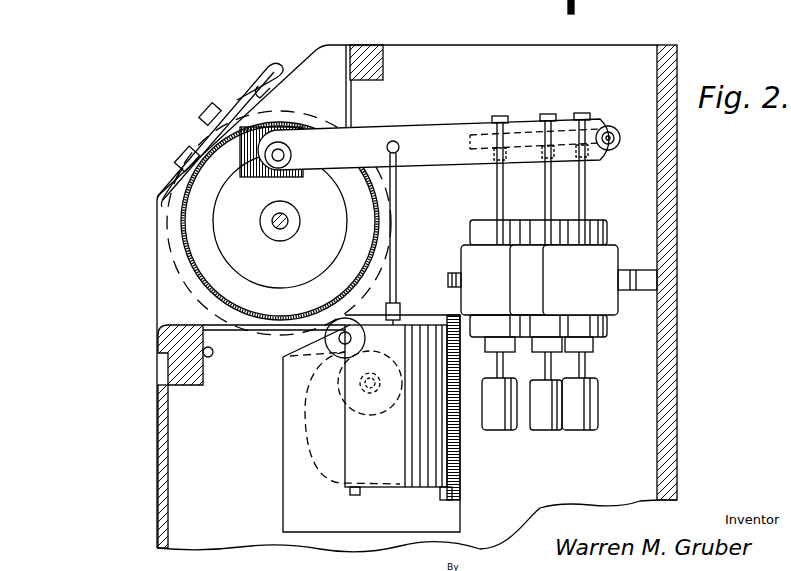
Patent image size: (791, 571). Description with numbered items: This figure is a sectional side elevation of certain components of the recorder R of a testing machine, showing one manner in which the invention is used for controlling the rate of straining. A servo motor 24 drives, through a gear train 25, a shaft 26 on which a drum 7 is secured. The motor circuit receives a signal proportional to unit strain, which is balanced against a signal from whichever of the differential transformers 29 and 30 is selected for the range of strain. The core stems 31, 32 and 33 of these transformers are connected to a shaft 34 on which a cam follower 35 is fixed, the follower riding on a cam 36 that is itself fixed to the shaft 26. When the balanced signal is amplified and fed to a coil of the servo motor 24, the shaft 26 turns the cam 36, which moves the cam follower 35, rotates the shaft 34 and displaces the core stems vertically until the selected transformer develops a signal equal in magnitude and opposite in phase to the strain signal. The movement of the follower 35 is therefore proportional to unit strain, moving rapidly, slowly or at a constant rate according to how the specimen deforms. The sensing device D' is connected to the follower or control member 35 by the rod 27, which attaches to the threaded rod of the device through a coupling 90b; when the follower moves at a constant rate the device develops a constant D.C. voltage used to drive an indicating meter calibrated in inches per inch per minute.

The recorder R is at (150, 429).
The drum 7 is at (213, 282).
The shaft 26 is at (265, 226).
The cam 36 is at (335, 197).
The cam follower 35 is at (432, 143).
The shaft 34 is at (608, 128).
The core stem 31 is at (496, 176).
The core stem 32 is at (546, 173).
The core stem 33 is at (585, 177).
The rod 27 is at (397, 280).
The coupling 90b is at (400, 308).
The differential transformer 29 is at (468, 232).
The differential transformer 30 is at (590, 232).
The sensing device D' is at (350, 423).
The gear train 25 is at (287, 357).
The servo motor 24 is at (312, 412).